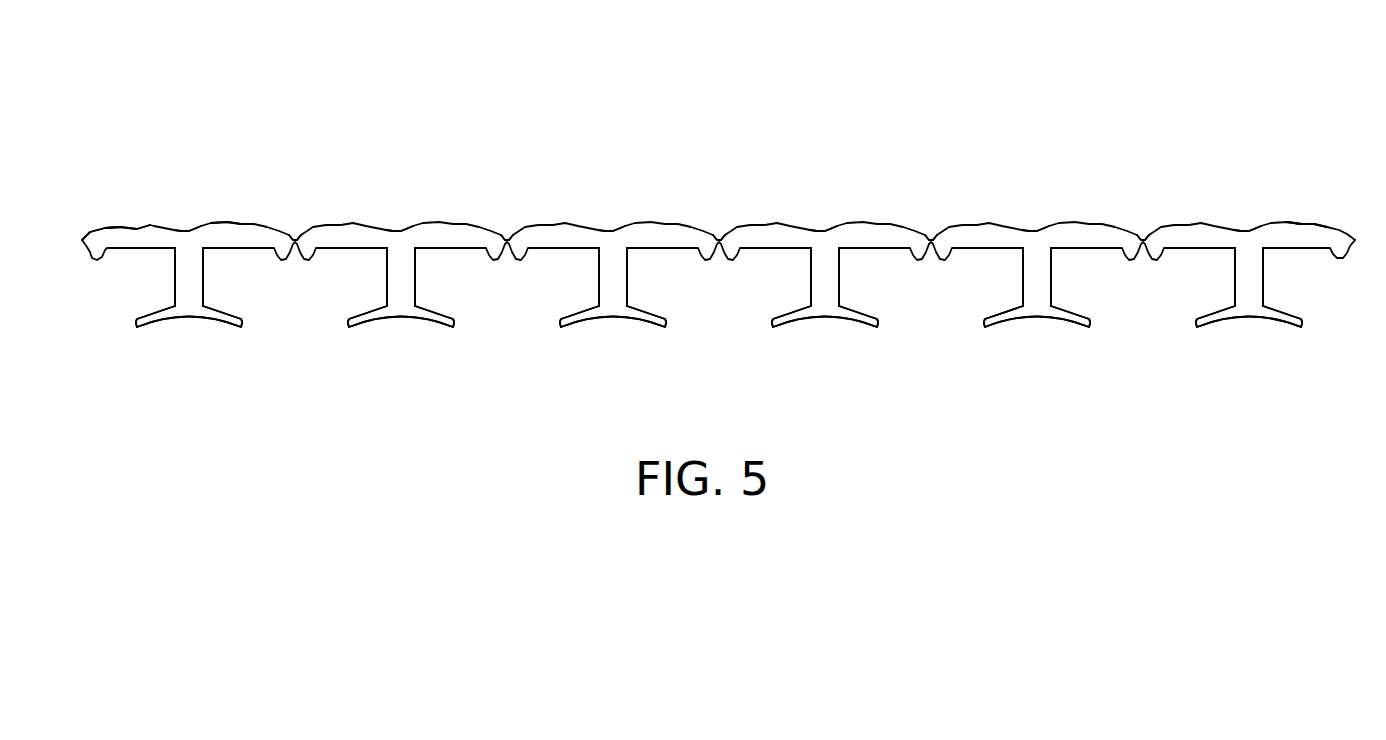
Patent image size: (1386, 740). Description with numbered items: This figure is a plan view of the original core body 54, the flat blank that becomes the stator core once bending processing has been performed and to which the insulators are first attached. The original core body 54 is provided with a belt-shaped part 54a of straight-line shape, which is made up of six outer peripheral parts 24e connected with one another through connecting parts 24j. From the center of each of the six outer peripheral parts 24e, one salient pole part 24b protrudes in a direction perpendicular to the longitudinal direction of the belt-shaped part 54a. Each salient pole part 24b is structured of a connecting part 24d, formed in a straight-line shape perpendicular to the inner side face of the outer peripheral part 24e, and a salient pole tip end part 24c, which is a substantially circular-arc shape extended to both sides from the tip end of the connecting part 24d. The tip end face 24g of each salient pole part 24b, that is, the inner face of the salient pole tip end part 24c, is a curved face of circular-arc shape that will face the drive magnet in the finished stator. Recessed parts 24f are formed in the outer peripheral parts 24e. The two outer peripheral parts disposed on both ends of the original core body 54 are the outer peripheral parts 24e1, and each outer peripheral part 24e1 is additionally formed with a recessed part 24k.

The original core body 54 is at (1303, 66).
The belt-shaped part 54a is at (118, 224).
The recessed part 24k is at (140, 228).
The recessed part 24f is at (189, 229).
The outer peripheral part 24e is at (443, 223).
The outer peripheral part 24e1 is at (232, 225).
The connecting part 24j is at (295, 237).
The salient pole part 24b is at (203, 273).
The connecting part 24d is at (719, 277).
The salient pole tip end part 24c is at (190, 318).
The tip end face 24g is at (719, 316).